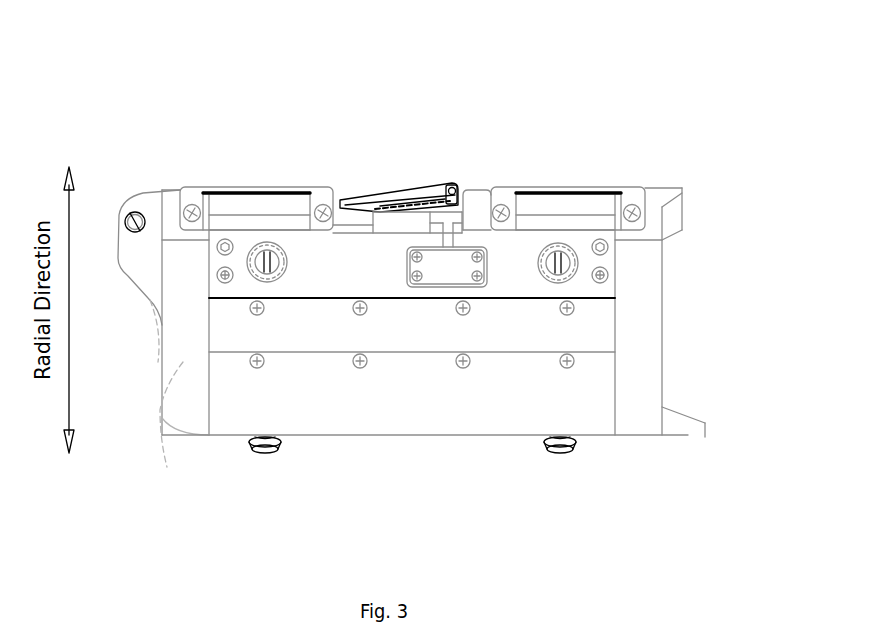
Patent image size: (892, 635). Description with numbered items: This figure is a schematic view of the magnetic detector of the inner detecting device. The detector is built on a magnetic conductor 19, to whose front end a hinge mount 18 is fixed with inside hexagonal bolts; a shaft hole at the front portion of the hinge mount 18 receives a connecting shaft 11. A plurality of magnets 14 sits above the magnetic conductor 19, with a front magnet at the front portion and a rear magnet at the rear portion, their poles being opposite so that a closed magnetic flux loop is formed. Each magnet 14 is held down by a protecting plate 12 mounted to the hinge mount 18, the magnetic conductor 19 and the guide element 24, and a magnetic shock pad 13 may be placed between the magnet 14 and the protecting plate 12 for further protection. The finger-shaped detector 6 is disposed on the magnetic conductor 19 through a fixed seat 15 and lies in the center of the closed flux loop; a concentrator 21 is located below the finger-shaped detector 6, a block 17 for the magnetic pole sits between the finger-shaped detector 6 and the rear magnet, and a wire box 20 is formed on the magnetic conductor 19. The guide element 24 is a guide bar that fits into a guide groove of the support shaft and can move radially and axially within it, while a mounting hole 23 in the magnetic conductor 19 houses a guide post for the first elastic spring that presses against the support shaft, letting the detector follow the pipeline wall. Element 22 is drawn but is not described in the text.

The finger-shaped detector 6 is at (407, 198).
The connecting shaft 11 is at (137, 216).
The protecting plate 12 is at (320, 195).
The magnetic shock pad 13 is at (272, 194).
The magnet 14 is at (223, 202).
The fixed seat 15 is at (355, 230).
The block for magnetic pole 17 is at (473, 208).
The hinge mount 18 is at (158, 433).
The magnetic conductor 19 is at (333, 333).
The wire box 20 is at (218, 416).
The concentrator 21 is at (411, 226).
The fixing plate 22 is at (455, 290).
The mounting hole 23 is at (265, 243).
The guide element 24 is at (258, 450).